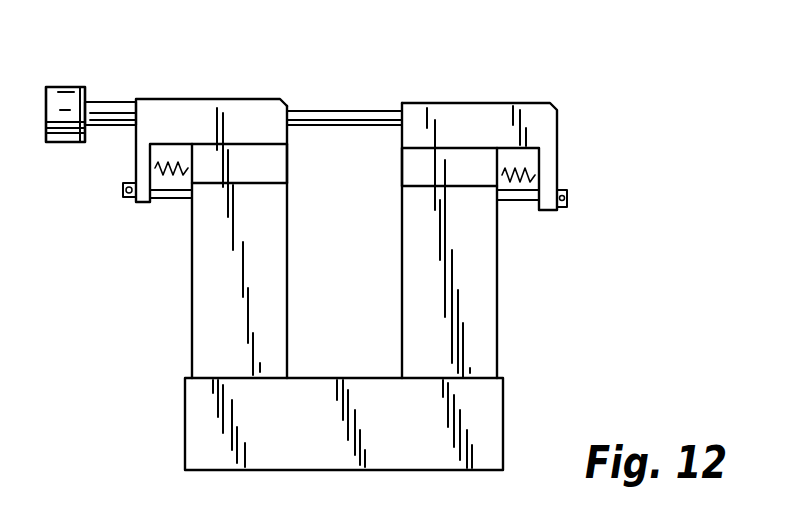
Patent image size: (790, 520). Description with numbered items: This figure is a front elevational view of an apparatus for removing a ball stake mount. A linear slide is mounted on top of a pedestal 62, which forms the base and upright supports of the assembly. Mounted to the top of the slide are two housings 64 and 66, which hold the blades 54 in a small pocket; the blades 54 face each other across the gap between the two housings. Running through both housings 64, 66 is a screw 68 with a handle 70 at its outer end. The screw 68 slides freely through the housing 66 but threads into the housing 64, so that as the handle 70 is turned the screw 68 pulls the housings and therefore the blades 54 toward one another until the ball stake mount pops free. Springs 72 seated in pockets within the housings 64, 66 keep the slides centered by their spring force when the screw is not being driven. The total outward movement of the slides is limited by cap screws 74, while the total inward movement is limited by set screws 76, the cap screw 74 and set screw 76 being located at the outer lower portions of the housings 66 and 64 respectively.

The blades 54 is at (388, 148).
The pedestal 62 is at (197, 346).
The housing 64 is at (453, 118).
The housing 66 is at (197, 117).
The screw 68 is at (318, 112).
The handle 70 is at (68, 83).
The springs 72 is at (523, 170).
The cap screws 74 is at (123, 197).
The set screws 76 is at (567, 200).